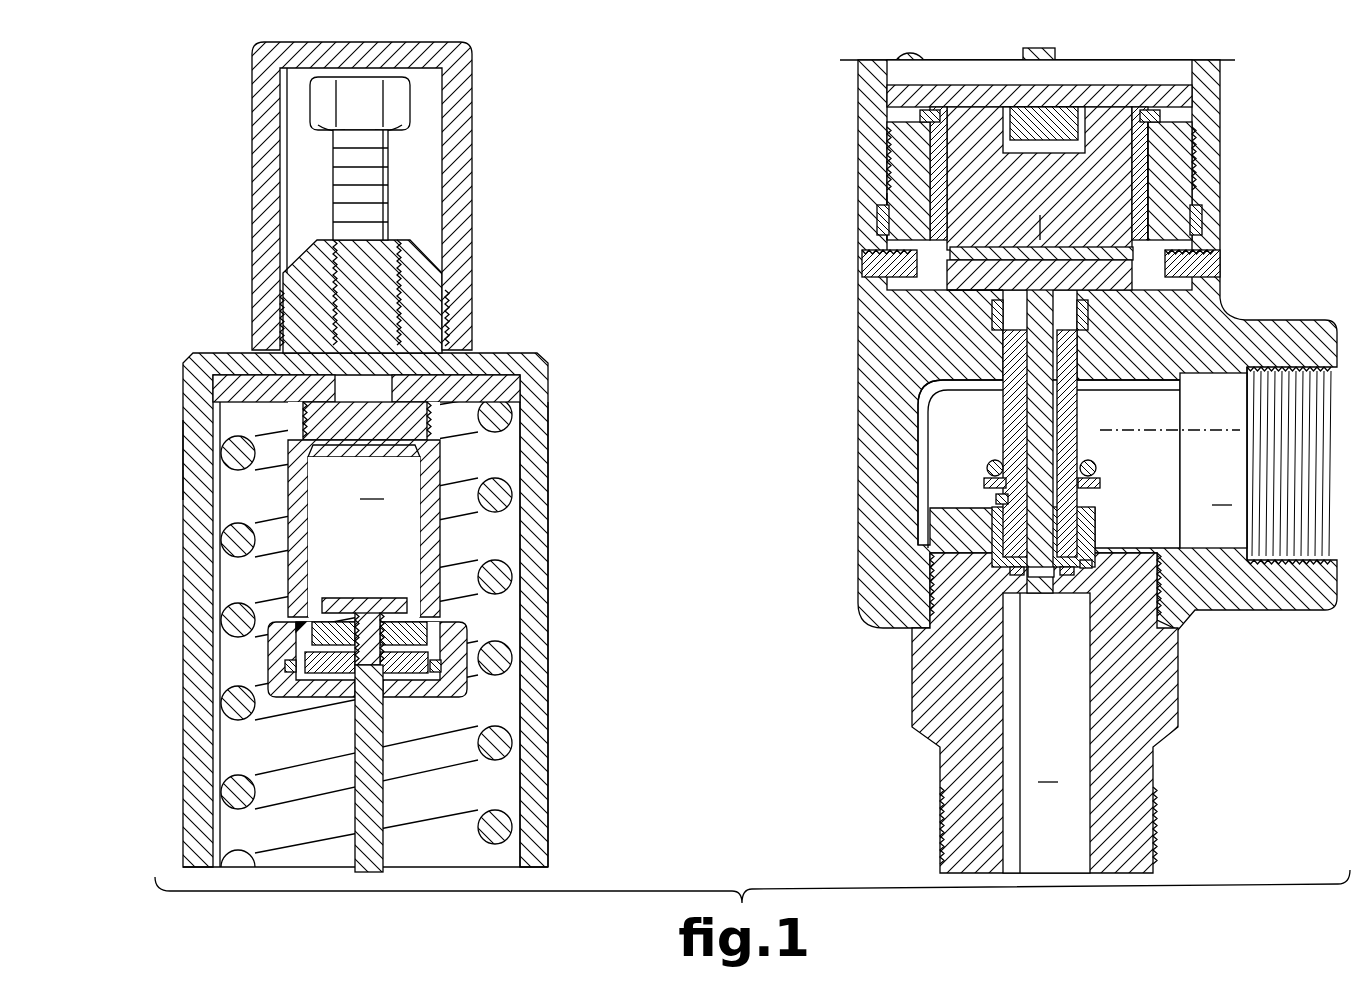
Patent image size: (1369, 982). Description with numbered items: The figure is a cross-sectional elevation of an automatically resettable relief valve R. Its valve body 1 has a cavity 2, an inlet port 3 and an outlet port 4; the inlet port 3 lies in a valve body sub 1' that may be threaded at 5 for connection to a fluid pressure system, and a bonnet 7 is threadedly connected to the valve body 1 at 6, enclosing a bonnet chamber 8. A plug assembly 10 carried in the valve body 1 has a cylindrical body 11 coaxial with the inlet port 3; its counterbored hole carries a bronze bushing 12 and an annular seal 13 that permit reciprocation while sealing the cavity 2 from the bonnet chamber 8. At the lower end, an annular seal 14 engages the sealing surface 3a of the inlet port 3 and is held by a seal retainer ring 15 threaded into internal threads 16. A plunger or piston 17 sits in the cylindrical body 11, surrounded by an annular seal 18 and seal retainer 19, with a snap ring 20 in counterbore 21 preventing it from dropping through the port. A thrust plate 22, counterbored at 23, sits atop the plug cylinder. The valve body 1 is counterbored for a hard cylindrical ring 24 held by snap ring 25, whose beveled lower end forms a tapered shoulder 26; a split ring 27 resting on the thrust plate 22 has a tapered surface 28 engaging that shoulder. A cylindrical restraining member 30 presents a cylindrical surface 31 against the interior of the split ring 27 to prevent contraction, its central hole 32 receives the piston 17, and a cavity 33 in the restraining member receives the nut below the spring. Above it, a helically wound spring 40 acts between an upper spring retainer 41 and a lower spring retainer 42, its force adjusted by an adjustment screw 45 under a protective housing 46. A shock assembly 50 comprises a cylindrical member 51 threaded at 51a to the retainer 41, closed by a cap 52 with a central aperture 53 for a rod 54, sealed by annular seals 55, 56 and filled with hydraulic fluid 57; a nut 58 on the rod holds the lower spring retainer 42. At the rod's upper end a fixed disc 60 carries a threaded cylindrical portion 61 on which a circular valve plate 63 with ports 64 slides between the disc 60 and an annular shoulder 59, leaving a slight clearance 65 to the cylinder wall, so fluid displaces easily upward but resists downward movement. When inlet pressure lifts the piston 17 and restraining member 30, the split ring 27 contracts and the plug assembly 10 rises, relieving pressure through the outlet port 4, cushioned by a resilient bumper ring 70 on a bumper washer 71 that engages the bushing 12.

The relief valve R is at (185, 780).
The valve body 1 is at (1076, 345).
The valve body sub 1' is at (1024, 713).
The cavity 2 is at (930, 460).
The inlet port 3 is at (1046, 733).
The sealing surface 3a is at (1085, 570).
The outlet port 4 is at (1271, 465).
The threads 5 is at (943, 800).
The threaded connection 6 is at (880, 180).
The valve bonnet 7 is at (195, 450).
The bonnet chamber 8 is at (510, 775).
The plug assembly 10 is at (1085, 430).
The cylindrical body 11 is at (1010, 400).
The bronze bushing 12 is at (1090, 370).
The annular seal 13 is at (1090, 300).
The annular seal 14 is at (1062, 575).
The valve seat insert 15 is at (1022, 575).
The internal threads 16 is at (1085, 550).
The plunger or piston 17 is at (1045, 445).
The annular seal 18 is at (1050, 578).
The seal retainer 19 is at (1000, 500).
The snap ring 20 is at (1000, 300).
The counterbore 21 is at (1077, 285).
The disc or plate 22 is at (980, 290).
The counterbore 23 is at (1080, 270).
The cylindrical ring 24 is at (1145, 175).
The snap ring 25 is at (1192, 122).
The tapered annular shoulder 26 is at (940, 240).
The split ring 27 is at (1128, 250).
The tapered surface 28 is at (1200, 240).
The cylindrical restraining member 30 is at (960, 145).
The cylindrical surface 31 is at (947, 250).
The central hole 32 is at (1042, 225).
The piston 33 is at (1078, 145).
The helically wound spring 40 is at (510, 662).
The upper spring retainer 41 is at (512, 385).
The lower spring retainer 42 is at (1180, 95).
The adjustment screw 45 is at (392, 195).
The protective housing 46 is at (452, 272).
The shock assembly 50 is at (450, 530).
The cylindrical member 51 is at (430, 476).
The threaded attachment 51a is at (432, 440).
The cap 52 is at (460, 690).
The central aperture 53 is at (355, 690).
The rod or shaft 54 is at (372, 812).
The annular seal 55 is at (290, 680).
The annular seal 56 is at (400, 680).
The hydraulic fluid 57 is at (364, 537).
The nut 58 is at (890, 113).
The annular shoulder 59 is at (300, 660).
The fixed disc 60 is at (368, 598).
The threaded cylindrical portion 61 is at (390, 613).
The circular valve plate 63 is at (440, 625).
The ports or passageways 64 is at (333, 622).
The clearance 65 is at (295, 622).
The resilient bumper ring 70 is at (1096, 470).
The bumper washer 71 is at (1100, 483).